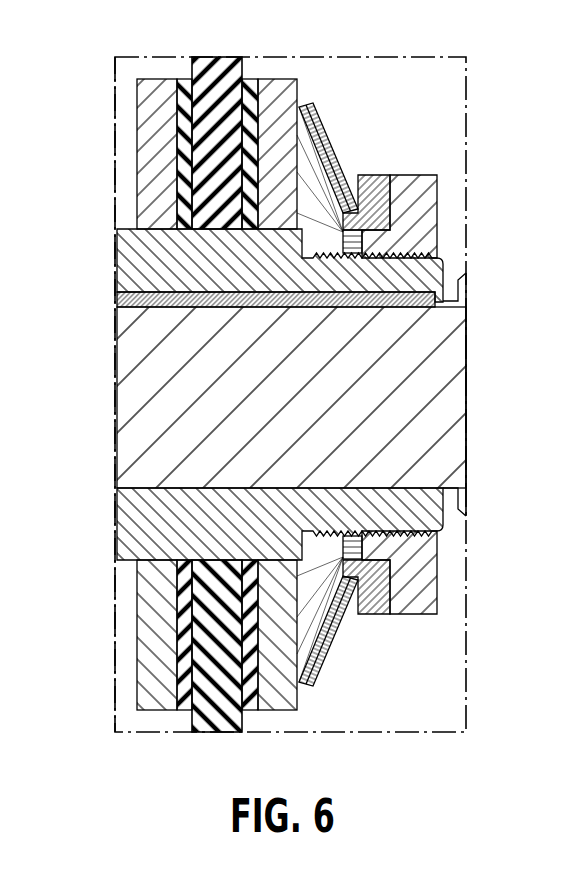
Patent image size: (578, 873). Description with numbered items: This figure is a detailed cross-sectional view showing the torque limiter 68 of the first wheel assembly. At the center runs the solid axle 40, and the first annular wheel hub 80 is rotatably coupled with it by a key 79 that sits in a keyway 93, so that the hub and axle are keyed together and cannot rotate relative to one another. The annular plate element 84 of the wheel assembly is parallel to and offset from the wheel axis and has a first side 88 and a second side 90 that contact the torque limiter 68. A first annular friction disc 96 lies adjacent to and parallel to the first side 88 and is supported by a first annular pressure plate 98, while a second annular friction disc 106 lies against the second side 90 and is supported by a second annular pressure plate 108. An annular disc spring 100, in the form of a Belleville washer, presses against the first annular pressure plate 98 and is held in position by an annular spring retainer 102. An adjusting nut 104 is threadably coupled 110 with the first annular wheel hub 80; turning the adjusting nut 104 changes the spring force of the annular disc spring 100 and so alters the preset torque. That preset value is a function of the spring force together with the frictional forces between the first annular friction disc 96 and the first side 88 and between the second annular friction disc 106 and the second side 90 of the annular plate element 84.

The solid axle 40 is at (122, 404).
The torque limiter 68 is at (342, 142).
The key 79 is at (118, 297).
The first annular wheel hub 80 is at (122, 262).
The annular plate element 84 is at (215, 57).
The first side 88 is at (254, 78).
The second side 90 is at (192, 63).
The keyway 93 is at (443, 302).
The first annular friction disc 96 is at (264, 72).
The first annular pressure plate 98 is at (293, 82).
The annular disc spring 100 is at (327, 131).
The annular spring retainer 102 is at (377, 183).
The adjusting nut 104 is at (423, 180).
The second annular friction disc 106 is at (152, 107).
The second annular pressure plate 108 is at (139, 193).
The threaded coupling 110 is at (425, 254).